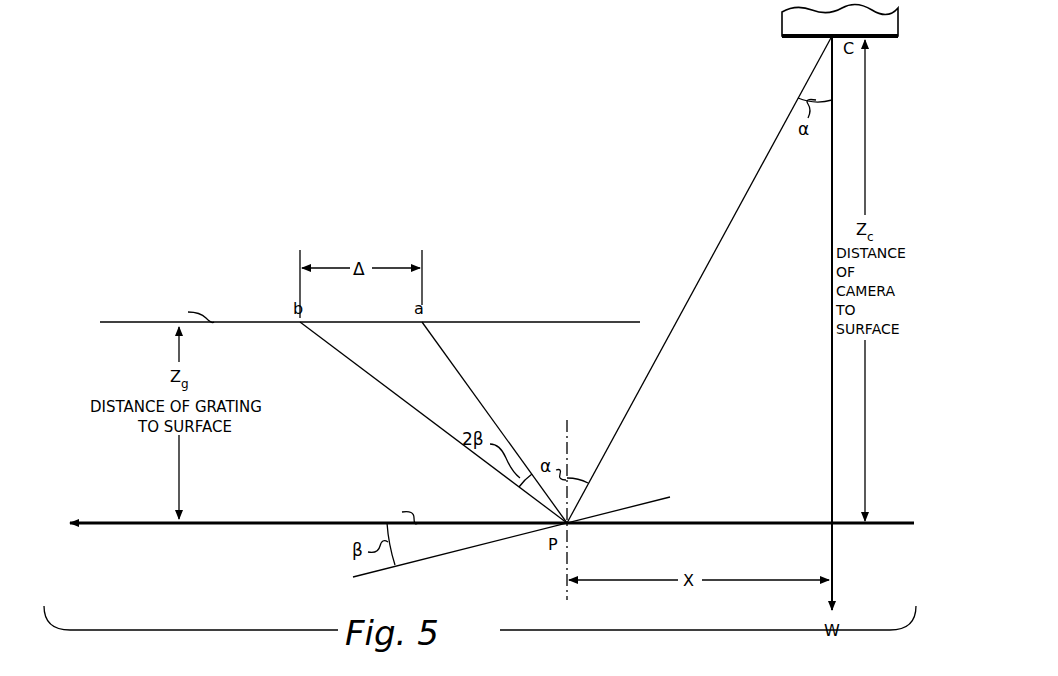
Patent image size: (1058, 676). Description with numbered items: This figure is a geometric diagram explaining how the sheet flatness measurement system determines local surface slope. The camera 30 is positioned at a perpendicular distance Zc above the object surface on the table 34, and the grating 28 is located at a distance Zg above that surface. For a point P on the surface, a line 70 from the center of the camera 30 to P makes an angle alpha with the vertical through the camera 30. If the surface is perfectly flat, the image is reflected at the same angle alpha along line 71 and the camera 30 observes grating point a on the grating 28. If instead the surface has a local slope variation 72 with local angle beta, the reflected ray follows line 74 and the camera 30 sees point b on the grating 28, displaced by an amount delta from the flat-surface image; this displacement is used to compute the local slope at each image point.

The grating 28 is at (244, 322).
The camera 30 is at (782, 22).
The table 34 is at (742, 522).
The camera line of sight 70 is at (710, 268).
The ray from grating point a 71 is at (485, 384).
The local slope variation 72 is at (460, 552).
The ray from grating point b 74 is at (398, 398).